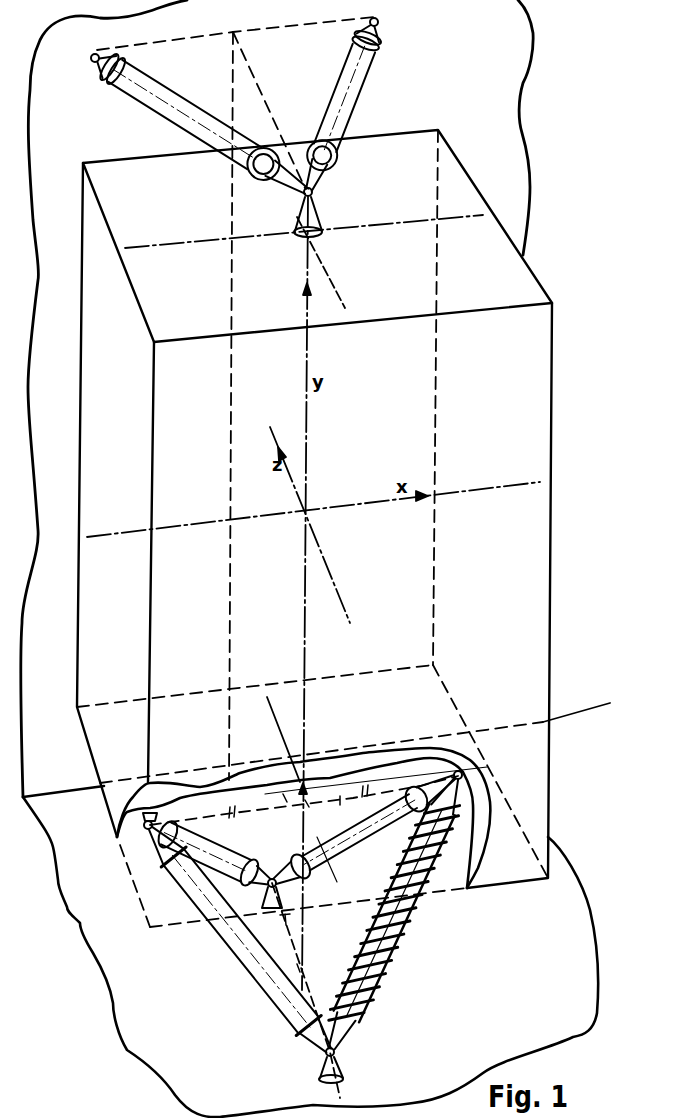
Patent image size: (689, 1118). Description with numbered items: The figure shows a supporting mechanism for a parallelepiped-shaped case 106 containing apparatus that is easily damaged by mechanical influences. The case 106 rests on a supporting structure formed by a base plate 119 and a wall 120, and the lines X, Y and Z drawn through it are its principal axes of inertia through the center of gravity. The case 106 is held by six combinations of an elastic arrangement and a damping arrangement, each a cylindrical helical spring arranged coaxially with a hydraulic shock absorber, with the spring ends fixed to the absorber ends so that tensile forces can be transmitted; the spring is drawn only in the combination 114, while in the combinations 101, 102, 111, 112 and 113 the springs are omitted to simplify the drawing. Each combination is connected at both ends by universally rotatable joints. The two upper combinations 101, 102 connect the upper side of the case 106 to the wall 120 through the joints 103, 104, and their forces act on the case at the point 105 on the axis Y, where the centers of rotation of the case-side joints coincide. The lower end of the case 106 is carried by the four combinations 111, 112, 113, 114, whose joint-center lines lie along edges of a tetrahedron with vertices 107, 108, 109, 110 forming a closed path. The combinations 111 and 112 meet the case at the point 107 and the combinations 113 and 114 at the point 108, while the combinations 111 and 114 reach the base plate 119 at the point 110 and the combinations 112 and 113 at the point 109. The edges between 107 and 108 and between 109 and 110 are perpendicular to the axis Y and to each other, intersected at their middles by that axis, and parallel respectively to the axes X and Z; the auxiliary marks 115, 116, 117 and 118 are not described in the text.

The combination of spring and shock absorber 101 is at (202, 123).
The combination of spring and shock absorber 102 is at (349, 108).
The universally rotatable joint 103 is at (79, 60).
The universally rotatable joint 104 is at (390, 21).
The point on principal axis of inertia Y 105 is at (312, 192).
The case 106 is at (549, 480).
The tetrahedron vertex (connection point) 107 is at (137, 833).
The tetrahedron vertex (connection point) 108 is at (462, 778).
The tetrahedron vertex (connection point) 109 is at (271, 875).
The tetrahedron vertex (connection point) 110 is at (335, 1052).
The combination of spring and shock absorber 111 is at (240, 940).
The combination of spring and shock absorber 112 is at (213, 853).
The combination of spring and shock absorber 113 is at (364, 829).
The combination of spring and shock absorber 114 is at (394, 914).
The reference point on lower actuator 115 is at (346, 803).
The reference point on vertical axis 116 is at (298, 935).
The center point of lower joint triangle 117 is at (269, 812).
The intersection point 118 is at (297, 967).
The base plate 119 is at (310, 932).
The wall 120 is at (277, 398).